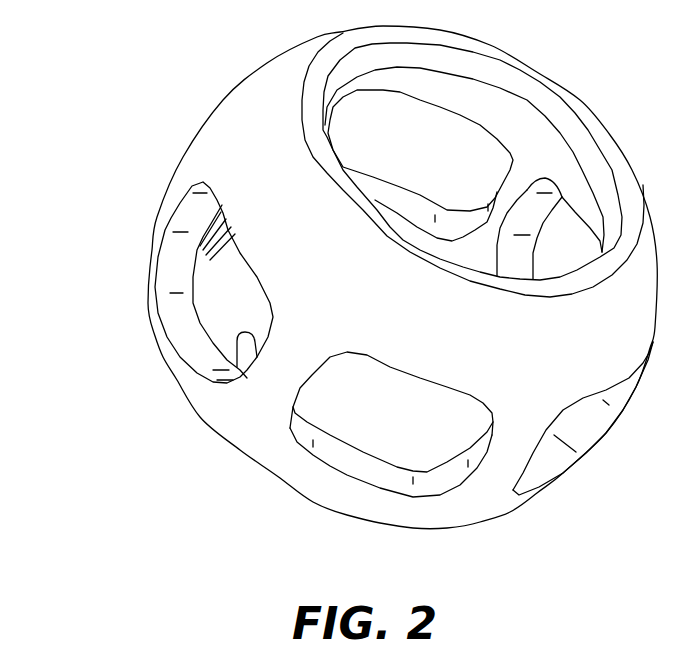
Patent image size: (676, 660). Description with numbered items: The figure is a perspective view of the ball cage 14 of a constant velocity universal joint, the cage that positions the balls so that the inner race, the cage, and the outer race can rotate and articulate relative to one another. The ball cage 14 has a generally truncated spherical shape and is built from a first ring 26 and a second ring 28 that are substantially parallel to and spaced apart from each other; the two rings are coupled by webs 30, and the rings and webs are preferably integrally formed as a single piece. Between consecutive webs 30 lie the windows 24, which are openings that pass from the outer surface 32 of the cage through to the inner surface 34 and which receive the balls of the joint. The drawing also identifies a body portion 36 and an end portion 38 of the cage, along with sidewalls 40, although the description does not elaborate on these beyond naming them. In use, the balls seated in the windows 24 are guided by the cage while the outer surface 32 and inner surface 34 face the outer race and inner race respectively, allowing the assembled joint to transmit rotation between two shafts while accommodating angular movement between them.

The ball cage 14 is at (227, 505).
The window 24 is at (343, 473).
The first ring 26 is at (233, 130).
The second ring 28 is at (173, 358).
The webs 30 is at (503, 463).
The outer surface 32 is at (441, 336).
The inner surface 34 is at (556, 172).
The body portion 36 is at (339, 324).
The end portion 38 is at (334, 224).
The sidewalls 40 is at (181, 221).